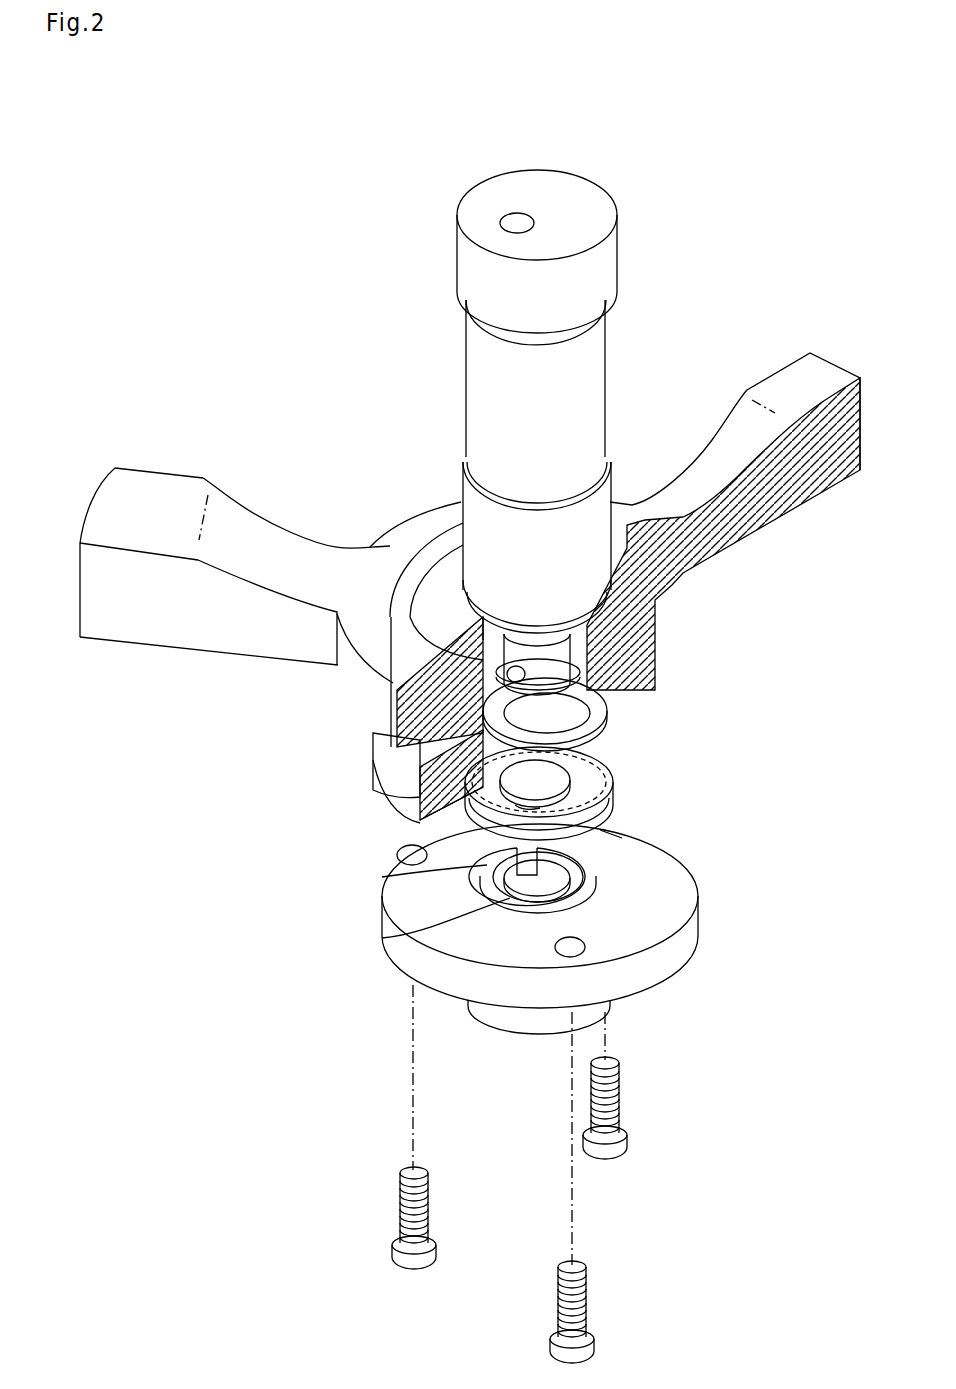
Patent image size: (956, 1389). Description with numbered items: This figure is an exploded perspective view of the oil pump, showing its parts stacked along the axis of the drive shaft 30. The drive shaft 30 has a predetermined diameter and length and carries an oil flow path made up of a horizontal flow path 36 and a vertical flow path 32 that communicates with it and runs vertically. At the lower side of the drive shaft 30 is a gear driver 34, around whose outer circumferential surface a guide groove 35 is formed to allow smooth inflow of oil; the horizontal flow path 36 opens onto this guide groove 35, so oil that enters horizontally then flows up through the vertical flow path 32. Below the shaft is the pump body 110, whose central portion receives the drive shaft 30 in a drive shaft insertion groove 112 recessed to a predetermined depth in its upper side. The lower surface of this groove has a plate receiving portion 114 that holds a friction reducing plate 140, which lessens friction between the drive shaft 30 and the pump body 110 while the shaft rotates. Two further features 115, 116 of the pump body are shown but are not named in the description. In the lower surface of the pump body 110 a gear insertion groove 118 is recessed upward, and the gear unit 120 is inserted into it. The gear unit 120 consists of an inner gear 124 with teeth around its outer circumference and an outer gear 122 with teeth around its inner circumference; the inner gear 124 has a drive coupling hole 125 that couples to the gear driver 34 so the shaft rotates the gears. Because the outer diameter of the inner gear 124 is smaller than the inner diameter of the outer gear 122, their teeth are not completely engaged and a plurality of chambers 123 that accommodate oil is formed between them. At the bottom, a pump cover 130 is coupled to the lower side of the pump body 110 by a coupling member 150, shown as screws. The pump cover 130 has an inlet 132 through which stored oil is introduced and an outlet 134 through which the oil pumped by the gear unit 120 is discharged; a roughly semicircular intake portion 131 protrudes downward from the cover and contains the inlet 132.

The drive shaft 30 is at (558, 182).
The vertical flow path 32 is at (517, 220).
The gear driver 34 is at (557, 648).
The guide groove 35 is at (552, 672).
The horizontal flow path 36 is at (410, 617).
The pump body 110 is at (151, 488).
The drive shaft insertion groove 112 is at (463, 633).
The plate receiving portion 114 is at (475, 655).
The bracket 115 is at (405, 785).
The pin 116 is at (560, 690).
The gear insertion groove 118 is at (487, 797).
The gear unit 120 is at (660, 742).
The outer gear 122 is at (596, 790).
The chambers 123 is at (622, 838).
The inner gear 124 is at (590, 780).
The drive coupling hole 125 is at (605, 806).
The pump cover 130 is at (682, 920).
The intake portion 131 is at (590, 1012).
The inlet 132 is at (505, 896).
The outlet 134 is at (478, 860).
The friction reducing plate 140 is at (616, 720).
The coupling member 150 is at (400, 1213).